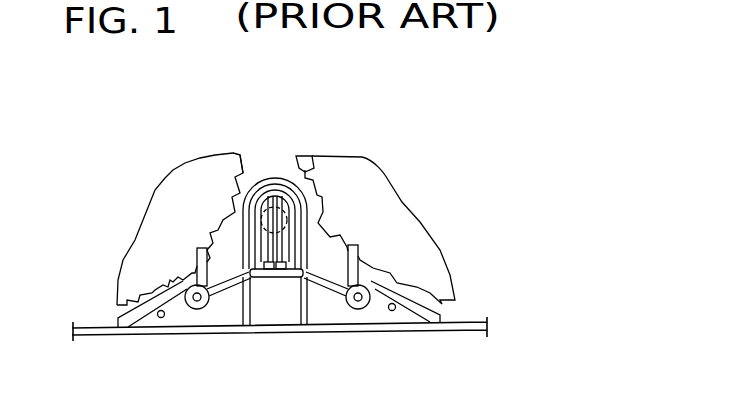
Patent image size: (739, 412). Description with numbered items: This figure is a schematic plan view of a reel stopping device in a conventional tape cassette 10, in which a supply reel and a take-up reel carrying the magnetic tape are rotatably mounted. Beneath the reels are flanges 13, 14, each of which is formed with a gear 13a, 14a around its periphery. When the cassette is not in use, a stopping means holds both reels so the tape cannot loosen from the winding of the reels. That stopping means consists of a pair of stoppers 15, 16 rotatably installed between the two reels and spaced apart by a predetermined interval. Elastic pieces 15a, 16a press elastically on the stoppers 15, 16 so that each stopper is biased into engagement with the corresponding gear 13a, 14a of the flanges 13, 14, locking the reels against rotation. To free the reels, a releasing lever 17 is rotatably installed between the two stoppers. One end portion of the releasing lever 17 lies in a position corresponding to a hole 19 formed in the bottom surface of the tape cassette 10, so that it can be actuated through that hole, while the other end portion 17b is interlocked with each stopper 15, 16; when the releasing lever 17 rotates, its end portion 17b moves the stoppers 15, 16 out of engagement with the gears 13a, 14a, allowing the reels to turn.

The tape cassette 10 is at (504, 303).
The flange 13 is at (155, 202).
The gear 13a is at (246, 172).
The flange 14 is at (409, 208).
The gear 14a is at (297, 158).
The stopper 15 is at (179, 308).
The elastic piece 15a is at (190, 309).
The stopper 16 is at (341, 325).
The elastic piece 16a is at (384, 308).
The releasing lever 17 is at (294, 196).
The other end portion 17b is at (340, 241).
The hole 19 is at (310, 197).